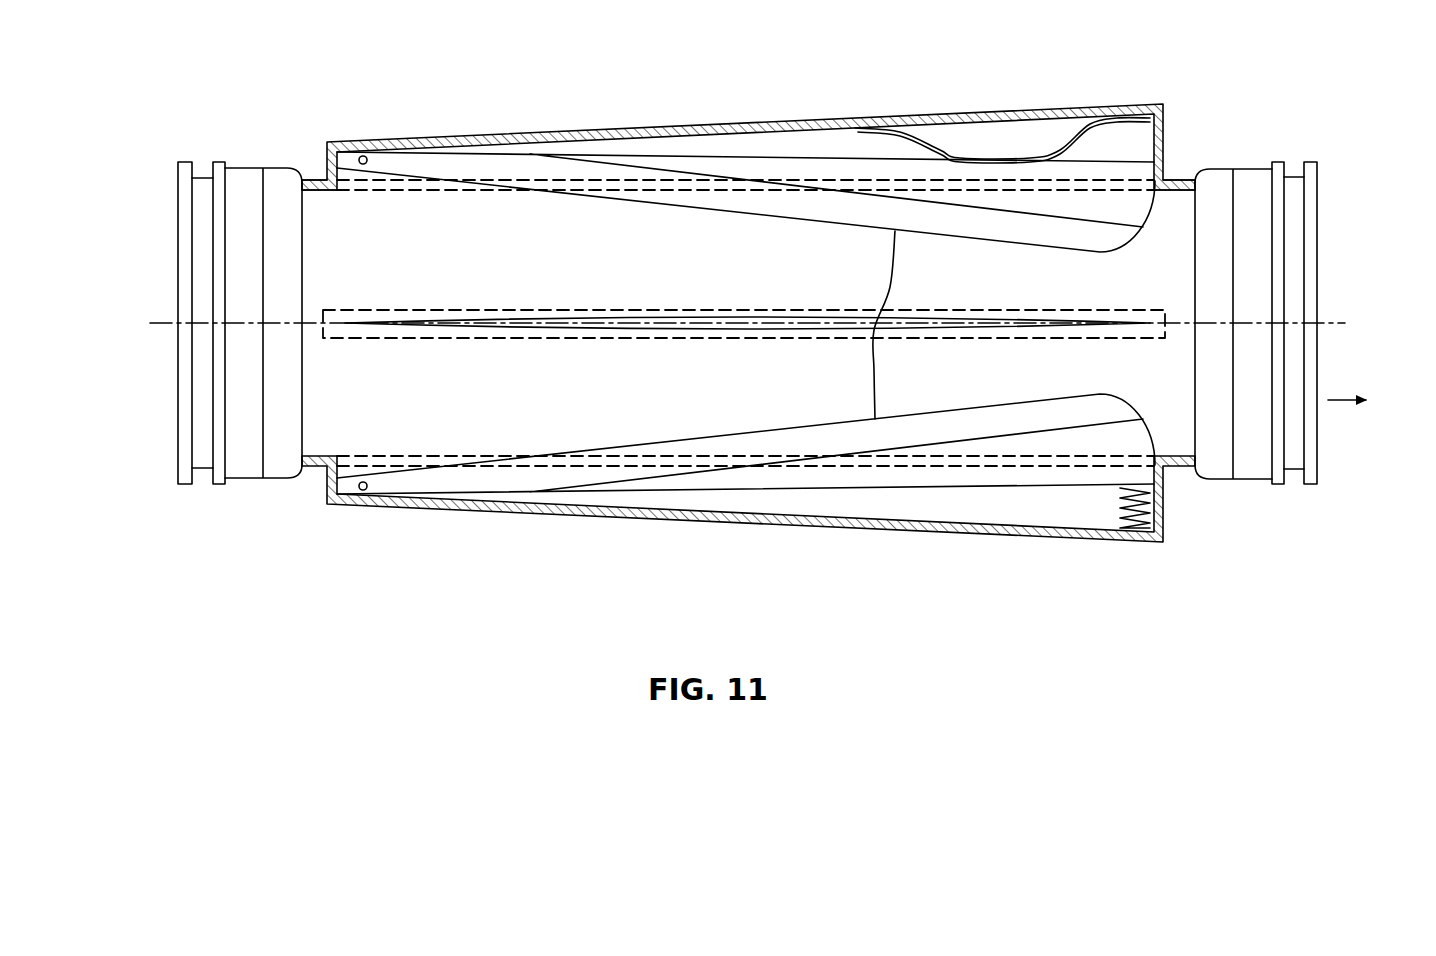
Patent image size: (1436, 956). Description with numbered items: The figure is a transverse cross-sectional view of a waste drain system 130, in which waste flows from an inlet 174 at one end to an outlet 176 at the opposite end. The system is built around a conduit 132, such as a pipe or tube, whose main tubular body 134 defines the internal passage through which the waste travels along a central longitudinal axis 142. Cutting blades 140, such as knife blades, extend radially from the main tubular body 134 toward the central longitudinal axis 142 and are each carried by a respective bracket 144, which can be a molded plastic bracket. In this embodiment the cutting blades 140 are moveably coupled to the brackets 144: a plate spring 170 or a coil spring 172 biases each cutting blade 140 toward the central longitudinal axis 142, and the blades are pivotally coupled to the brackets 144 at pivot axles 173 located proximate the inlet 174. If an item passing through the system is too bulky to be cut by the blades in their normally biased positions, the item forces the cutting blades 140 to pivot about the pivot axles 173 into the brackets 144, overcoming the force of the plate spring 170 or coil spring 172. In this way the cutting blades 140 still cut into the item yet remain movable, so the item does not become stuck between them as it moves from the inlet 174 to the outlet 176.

The waste drain system 130 is at (231, 82).
The conduit 132 is at (1182, 179).
The main tubular body 134 is at (313, 177).
The cutting blade 140 is at (728, 555).
The central longitudinal axis 142 is at (1340, 323).
The bracket 144 is at (1151, 99).
The plate spring 170 is at (941, 146).
The coil spring 172 is at (1144, 539).
The pivot axle 173 is at (366, 156).
The inlet 174 is at (178, 248).
The outlet 176 is at (1318, 215).